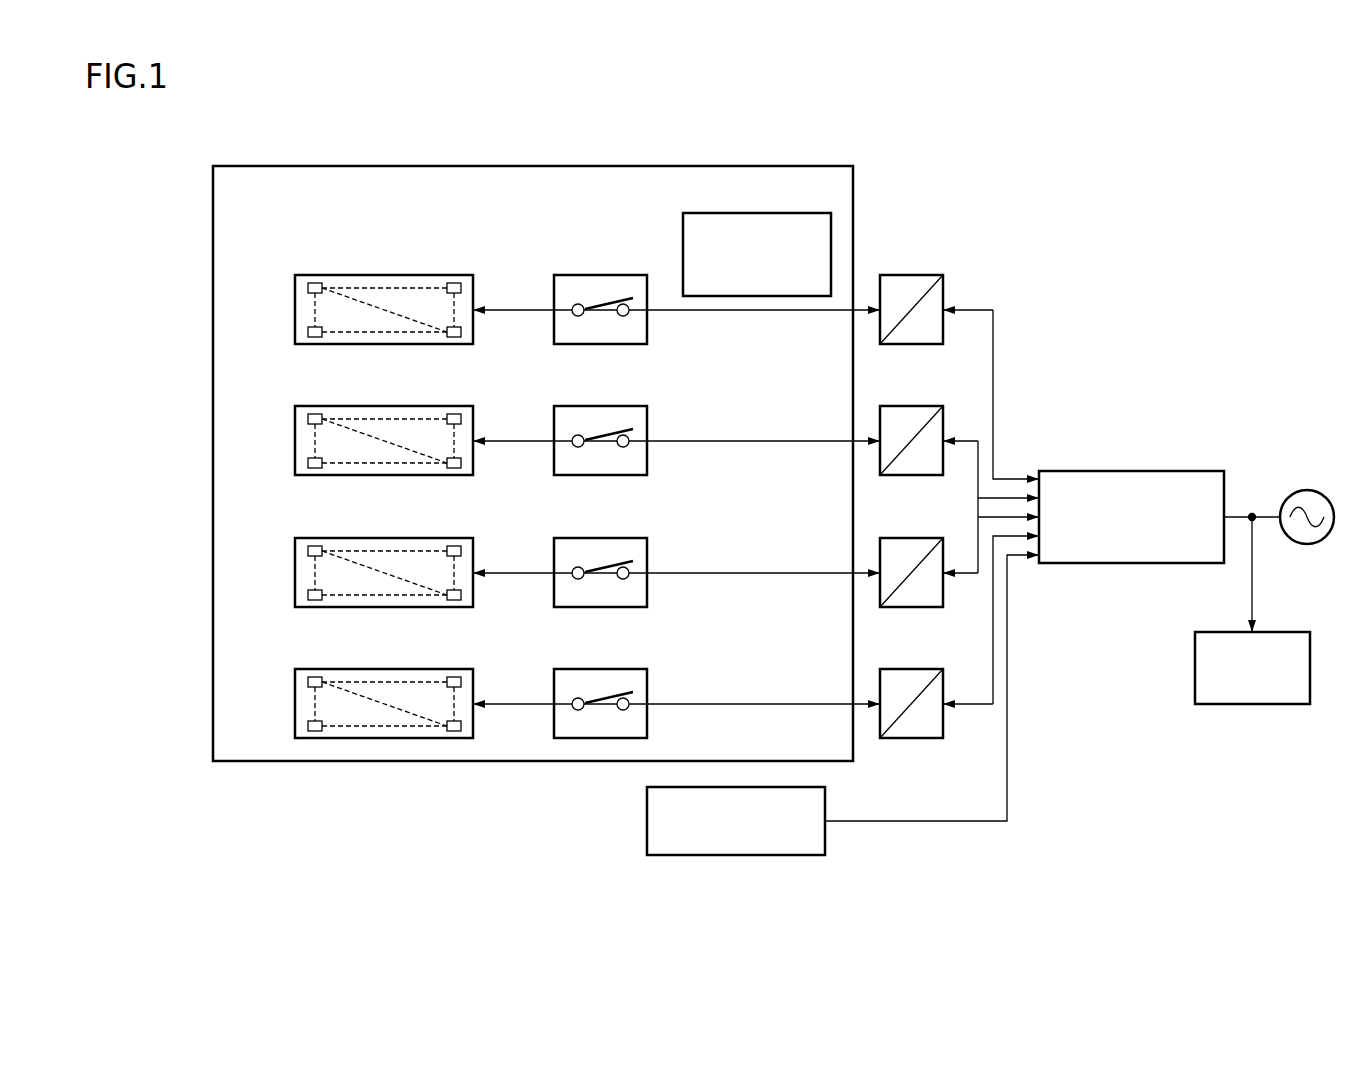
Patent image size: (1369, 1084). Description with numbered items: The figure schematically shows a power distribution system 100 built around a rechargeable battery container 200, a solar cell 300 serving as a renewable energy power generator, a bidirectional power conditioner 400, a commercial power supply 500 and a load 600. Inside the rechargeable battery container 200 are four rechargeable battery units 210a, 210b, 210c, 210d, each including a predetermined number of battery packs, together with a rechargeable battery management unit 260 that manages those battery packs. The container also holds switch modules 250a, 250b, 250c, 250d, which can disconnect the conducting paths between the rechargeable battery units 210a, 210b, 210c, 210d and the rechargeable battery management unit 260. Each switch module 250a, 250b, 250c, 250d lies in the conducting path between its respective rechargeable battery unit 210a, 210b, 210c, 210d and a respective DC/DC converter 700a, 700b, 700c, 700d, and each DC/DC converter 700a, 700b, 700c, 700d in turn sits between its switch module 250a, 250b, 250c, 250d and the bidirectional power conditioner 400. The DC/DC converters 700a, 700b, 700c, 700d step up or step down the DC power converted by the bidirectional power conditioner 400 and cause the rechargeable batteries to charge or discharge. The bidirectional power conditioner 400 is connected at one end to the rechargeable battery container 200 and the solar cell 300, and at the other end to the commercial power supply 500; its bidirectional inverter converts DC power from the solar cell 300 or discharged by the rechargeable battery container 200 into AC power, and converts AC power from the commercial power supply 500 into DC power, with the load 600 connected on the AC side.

The power distribution system 100 is at (797, 118).
The rechargeable battery container 200 is at (834, 166).
The rechargeable battery unit 210a is at (393, 275).
The rechargeable battery unit 210b is at (393, 406).
The rechargeable battery unit 210c is at (393, 538).
The rechargeable battery unit 210d is at (393, 669).
The switch module 250a is at (612, 258).
The switch module 250b is at (612, 389).
The switch module 250c is at (612, 521).
The switch module 250d is at (612, 652).
The rechargeable battery management unit 260 is at (774, 213).
The solar cell 300 is at (647, 839).
The bidirectional power conditioner 400 is at (1177, 471).
The commercial power supply 500 is at (1308, 490).
The load 600 is at (1278, 632).
The DC/DC converter 700a is at (917, 275).
The DC/DC converter 700b is at (917, 406).
The DC/DC converter 700c is at (917, 538).
The DC/DC converter 700d is at (917, 669).